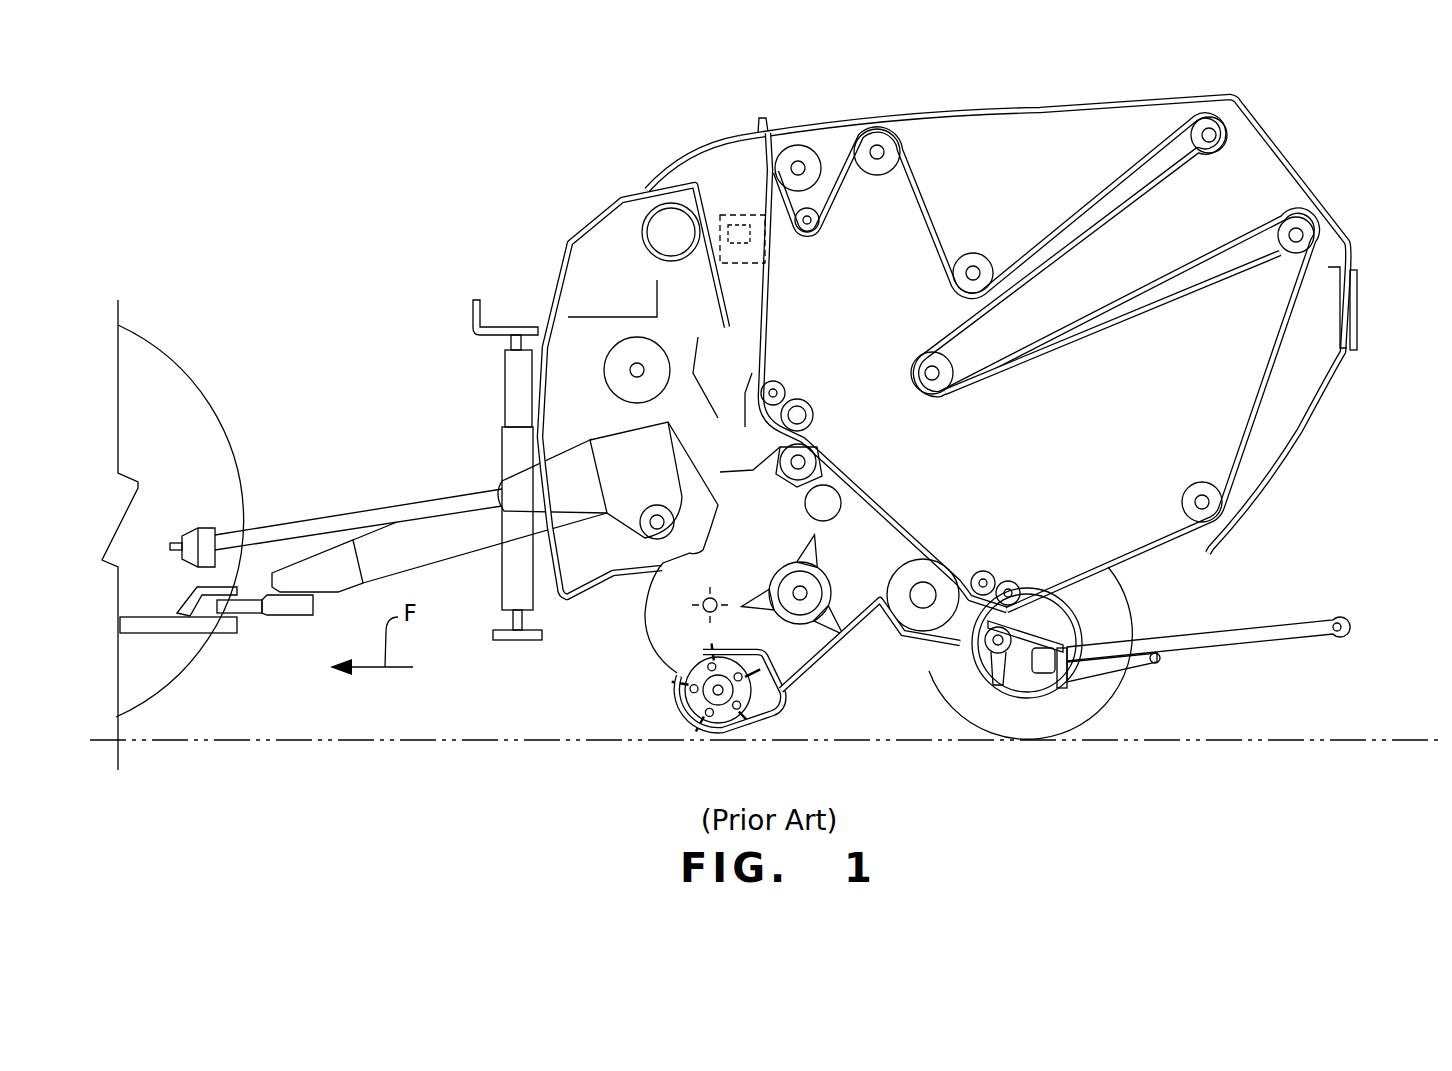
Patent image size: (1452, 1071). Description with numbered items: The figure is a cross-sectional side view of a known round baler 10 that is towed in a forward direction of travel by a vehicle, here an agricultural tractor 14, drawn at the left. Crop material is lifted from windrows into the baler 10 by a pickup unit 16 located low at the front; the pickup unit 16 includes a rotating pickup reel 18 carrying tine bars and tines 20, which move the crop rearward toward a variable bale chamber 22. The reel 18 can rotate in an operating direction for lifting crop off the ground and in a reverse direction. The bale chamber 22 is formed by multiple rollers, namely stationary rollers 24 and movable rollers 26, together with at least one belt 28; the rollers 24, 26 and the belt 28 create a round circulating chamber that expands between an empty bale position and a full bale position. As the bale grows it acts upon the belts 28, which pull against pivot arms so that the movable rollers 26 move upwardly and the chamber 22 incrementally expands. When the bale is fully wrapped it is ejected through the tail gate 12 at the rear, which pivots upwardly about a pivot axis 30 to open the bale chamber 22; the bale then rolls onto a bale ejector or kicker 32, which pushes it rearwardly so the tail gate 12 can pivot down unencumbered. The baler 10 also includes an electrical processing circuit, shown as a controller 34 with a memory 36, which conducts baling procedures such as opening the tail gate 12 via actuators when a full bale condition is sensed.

The round baler 10 is at (829, 422).
The tail gate 12 is at (1376, 314).
The tractor 14 is at (197, 380).
The pickup unit 16 is at (672, 747).
The pickup reel 18 is at (765, 710).
The tines 20 is at (678, 678).
The variable bale chamber 22 is at (1022, 462).
The stationary rollers 24 is at (875, 125).
The movable rollers 26 is at (920, 357).
The belt 28 is at (855, 475).
The pivot axis 30 is at (756, 157).
The bale ejector or kicker 32 is at (1258, 638).
The controller 34 is at (748, 263).
The memory 36 is at (750, 242).